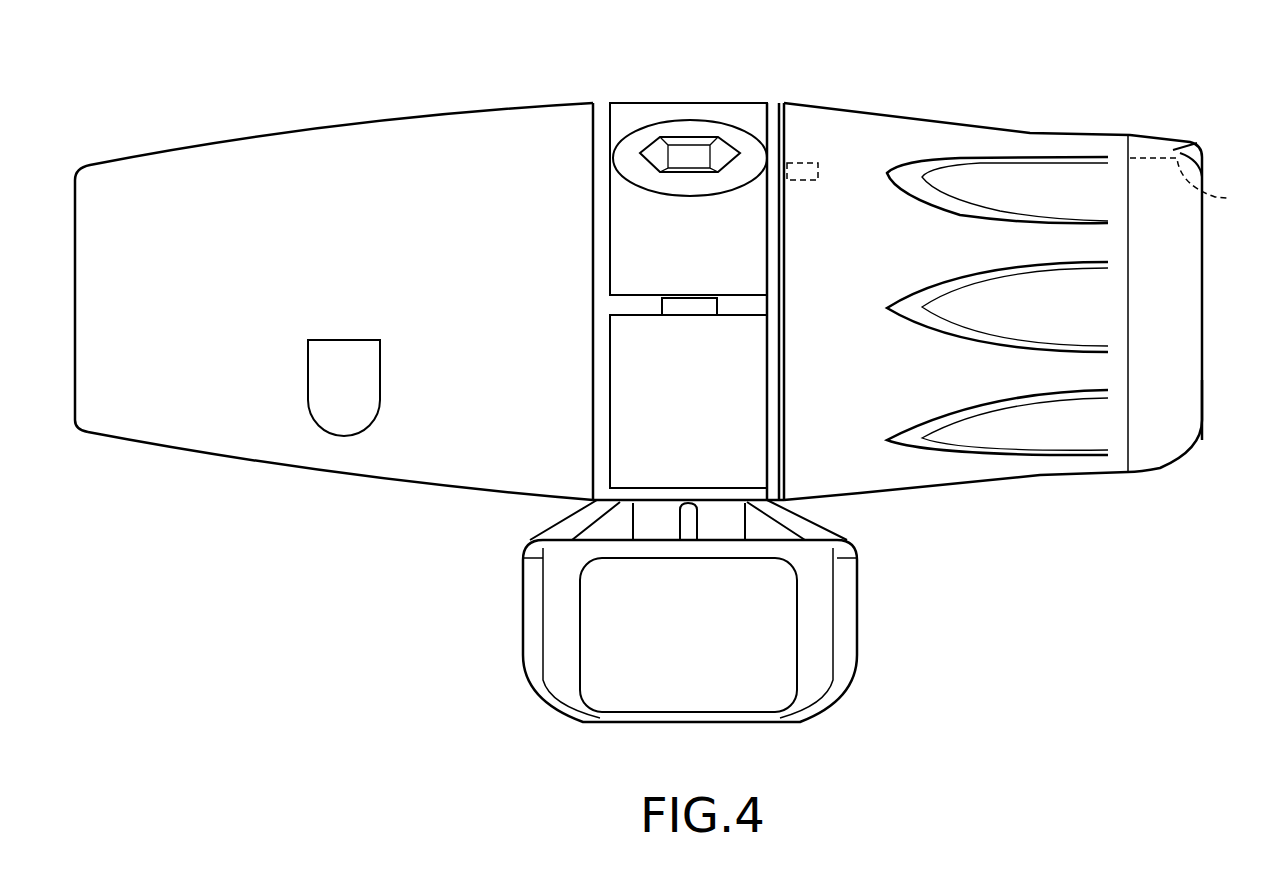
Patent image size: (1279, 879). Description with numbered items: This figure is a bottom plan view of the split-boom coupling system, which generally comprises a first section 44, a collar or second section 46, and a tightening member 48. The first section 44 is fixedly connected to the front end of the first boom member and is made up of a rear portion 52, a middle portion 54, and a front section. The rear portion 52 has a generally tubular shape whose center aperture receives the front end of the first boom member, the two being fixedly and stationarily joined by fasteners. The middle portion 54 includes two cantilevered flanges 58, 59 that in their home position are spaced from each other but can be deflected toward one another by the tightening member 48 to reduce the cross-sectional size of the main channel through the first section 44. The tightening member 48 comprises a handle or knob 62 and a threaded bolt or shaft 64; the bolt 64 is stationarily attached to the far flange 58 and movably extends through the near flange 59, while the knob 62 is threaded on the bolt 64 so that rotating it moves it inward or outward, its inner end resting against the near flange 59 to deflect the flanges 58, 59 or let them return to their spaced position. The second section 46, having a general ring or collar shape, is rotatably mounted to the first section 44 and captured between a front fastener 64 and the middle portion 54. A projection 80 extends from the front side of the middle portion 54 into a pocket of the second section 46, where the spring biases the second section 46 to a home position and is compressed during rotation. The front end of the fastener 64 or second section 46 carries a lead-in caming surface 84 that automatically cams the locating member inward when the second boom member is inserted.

The first section 44 is at (237, 138).
The second section 46 is at (903, 118).
The tightening member 48 is at (835, 693).
The rear portion 52 is at (205, 457).
The middle portion 54 is at (672, 105).
The far flange 58 is at (628, 228).
The near flange 59 is at (625, 358).
The knob 62 is at (566, 708).
The bolt 64 is at (693, 305).
The projection 80 is at (800, 162).
The lead-in caming surface 84 is at (1195, 178).